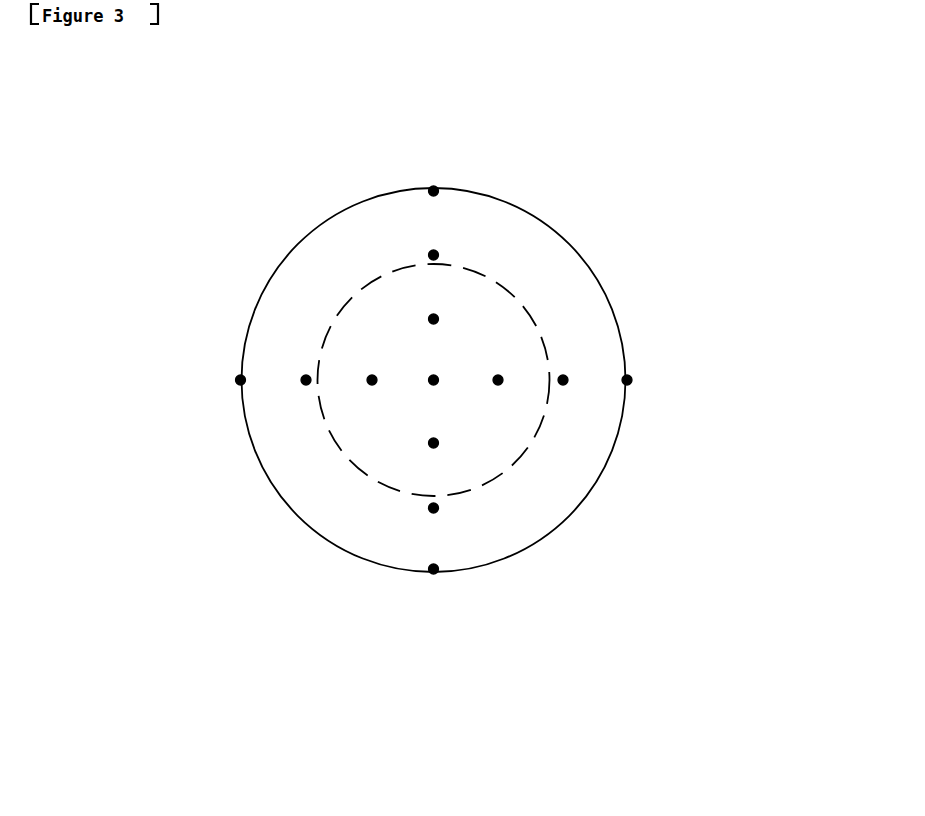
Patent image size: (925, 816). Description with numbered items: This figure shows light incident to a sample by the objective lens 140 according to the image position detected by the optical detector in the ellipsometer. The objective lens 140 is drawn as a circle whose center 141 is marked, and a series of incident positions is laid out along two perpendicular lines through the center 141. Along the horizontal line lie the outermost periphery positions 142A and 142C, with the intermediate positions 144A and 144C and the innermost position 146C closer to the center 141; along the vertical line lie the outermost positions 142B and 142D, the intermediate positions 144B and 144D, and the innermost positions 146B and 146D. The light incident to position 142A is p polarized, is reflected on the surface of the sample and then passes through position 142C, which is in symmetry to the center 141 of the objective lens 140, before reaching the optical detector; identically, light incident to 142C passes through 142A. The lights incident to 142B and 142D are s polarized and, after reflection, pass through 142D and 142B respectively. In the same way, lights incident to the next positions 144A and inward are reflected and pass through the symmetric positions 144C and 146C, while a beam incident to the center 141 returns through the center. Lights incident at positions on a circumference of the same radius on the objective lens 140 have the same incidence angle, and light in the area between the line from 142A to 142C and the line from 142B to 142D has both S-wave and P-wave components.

The objective lens 140 is at (535, 543).
The center of the objective lens 141 is at (433, 379).
The light incident position on the outermost periphery 142A is at (240, 379).
The light incident position on the outermost periphery 142B is at (433, 191).
The light incident position on the outermost periphery 142C is at (627, 380).
The light incident position on the outermost periphery 142D is at (433, 568).
The light incident position at the next inner radius 144A is at (306, 379).
The light incident position at the next inner radius 144B is at (433, 255).
The light incident position at the next inner radius 144C is at (563, 380).
The light incident position at the next inner radius 144D is at (433, 508).
The light incident position at the innermost radius 146B is at (433, 319).
The light incident position at the innermost radius 146C is at (498, 380).
The light incident position at the innermost radius 146D is at (372, 379).